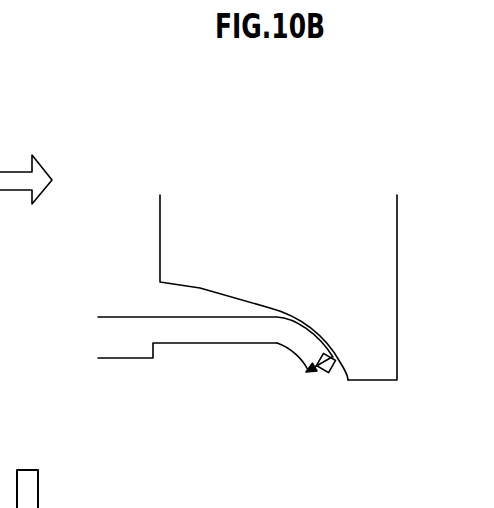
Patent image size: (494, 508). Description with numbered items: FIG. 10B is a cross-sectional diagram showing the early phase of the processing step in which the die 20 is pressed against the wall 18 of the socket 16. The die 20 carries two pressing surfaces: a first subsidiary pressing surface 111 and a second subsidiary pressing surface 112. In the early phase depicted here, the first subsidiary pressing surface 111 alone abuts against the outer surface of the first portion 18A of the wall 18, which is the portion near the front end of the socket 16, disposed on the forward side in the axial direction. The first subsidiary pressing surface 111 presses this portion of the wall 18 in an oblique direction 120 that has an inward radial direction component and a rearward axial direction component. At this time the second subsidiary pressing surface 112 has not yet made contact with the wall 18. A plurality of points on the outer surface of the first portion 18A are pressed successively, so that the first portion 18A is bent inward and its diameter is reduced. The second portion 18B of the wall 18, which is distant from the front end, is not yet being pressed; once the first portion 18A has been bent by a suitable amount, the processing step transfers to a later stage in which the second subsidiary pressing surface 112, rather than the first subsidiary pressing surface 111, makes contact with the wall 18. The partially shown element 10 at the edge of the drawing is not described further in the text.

The display device 10 is at (7, 70).
The die 20 is at (398, 235).
The second subsidiary pressing surface 112 is at (200, 288).
The socket 16 is at (140, 317).
The wall 18 is at (238, 335).
The second portion 18B is at (210, 328).
The first portion 18A is at (315, 350).
The first subsidiary pressing surface 111 is at (281, 348).
The oblique direction 120 is at (330, 380).